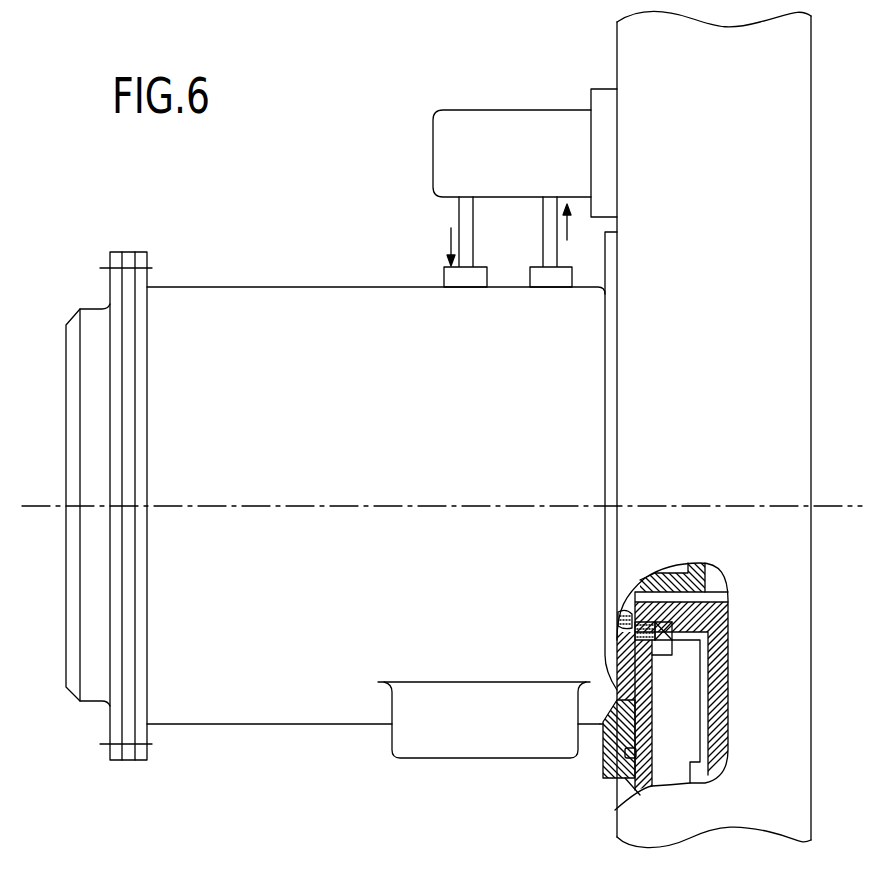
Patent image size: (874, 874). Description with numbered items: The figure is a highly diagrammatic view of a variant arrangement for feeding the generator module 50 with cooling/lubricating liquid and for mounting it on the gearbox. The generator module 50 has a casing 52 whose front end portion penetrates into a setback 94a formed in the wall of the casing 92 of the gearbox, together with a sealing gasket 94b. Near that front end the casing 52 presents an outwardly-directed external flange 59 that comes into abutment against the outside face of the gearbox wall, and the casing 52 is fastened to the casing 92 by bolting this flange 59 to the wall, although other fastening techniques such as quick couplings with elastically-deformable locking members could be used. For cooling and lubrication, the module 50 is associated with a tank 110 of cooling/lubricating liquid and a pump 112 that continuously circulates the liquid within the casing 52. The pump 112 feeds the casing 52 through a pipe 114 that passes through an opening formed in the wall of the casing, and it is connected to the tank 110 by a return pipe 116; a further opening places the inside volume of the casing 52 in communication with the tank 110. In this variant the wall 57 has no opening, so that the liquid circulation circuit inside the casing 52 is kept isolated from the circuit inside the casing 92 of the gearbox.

The generator module 50 is at (329, 268).
The casing 52 is at (217, 300).
The wall 57 is at (648, 688).
The external flange 59 is at (600, 768).
The casing of the gearbox 92 is at (608, 819).
The setback 94a is at (637, 775).
The sealing gasket 94b is at (637, 755).
The tank 110 is at (440, 708).
The pump 112 is at (533, 135).
The pipe 114 is at (458, 220).
The return pipe 116 is at (548, 225).